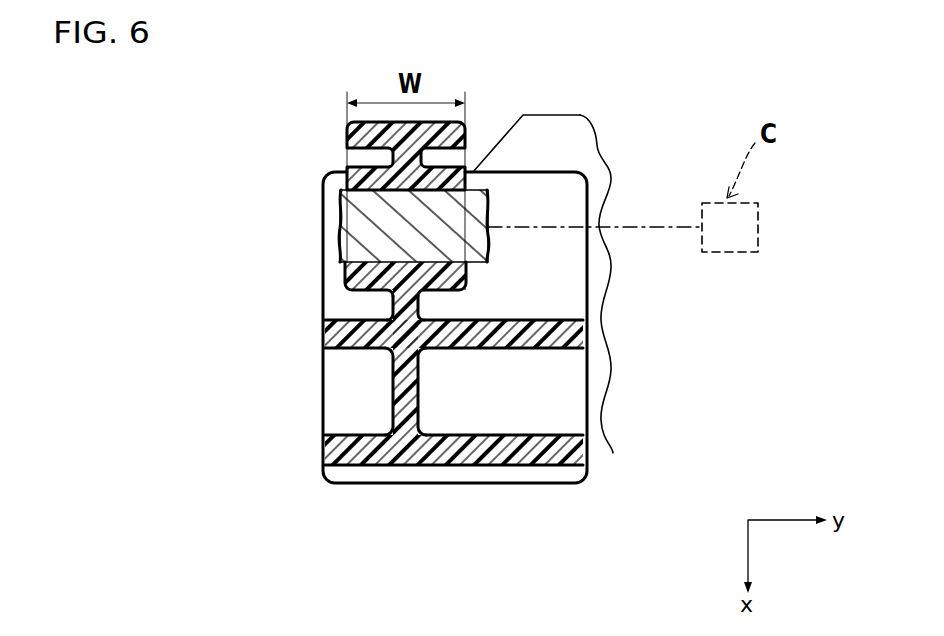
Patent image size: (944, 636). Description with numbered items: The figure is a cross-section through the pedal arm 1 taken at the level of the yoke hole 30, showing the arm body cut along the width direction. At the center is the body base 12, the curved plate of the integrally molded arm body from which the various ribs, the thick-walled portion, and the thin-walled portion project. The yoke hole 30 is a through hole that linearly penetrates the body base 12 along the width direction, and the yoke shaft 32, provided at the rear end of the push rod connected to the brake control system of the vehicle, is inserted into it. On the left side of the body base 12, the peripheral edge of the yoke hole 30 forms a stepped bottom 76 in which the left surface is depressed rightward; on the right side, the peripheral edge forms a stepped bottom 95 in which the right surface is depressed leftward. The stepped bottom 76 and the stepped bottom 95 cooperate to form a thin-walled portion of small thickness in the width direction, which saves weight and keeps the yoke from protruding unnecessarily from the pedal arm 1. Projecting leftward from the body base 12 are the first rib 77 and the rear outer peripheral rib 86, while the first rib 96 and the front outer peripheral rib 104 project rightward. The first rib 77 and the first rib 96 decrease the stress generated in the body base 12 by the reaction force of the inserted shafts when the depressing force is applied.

The pedal arm 1 is at (594, 81).
The body base 12 is at (400, 380).
The yoke hole 30 is at (366, 196).
The yoke shaft 32 is at (346, 241).
The stepped bottom 76 is at (347, 274).
The first rib 77 is at (352, 142).
The rear outer peripheral rib 86 is at (338, 443).
The stepped bottom 95 is at (467, 272).
The first rib 96 is at (466, 125).
The front outer peripheral rib 104 is at (576, 452).